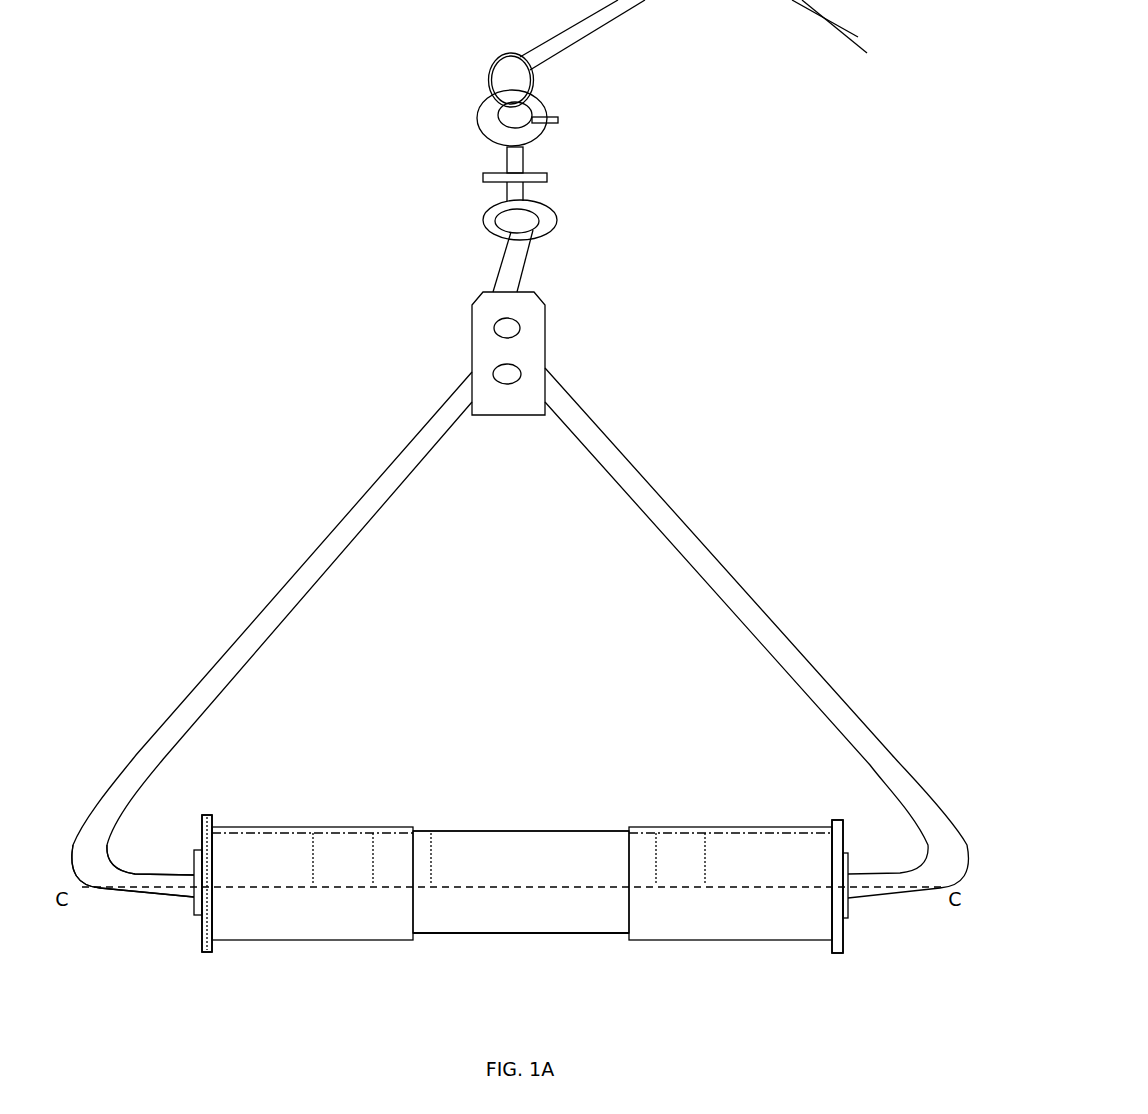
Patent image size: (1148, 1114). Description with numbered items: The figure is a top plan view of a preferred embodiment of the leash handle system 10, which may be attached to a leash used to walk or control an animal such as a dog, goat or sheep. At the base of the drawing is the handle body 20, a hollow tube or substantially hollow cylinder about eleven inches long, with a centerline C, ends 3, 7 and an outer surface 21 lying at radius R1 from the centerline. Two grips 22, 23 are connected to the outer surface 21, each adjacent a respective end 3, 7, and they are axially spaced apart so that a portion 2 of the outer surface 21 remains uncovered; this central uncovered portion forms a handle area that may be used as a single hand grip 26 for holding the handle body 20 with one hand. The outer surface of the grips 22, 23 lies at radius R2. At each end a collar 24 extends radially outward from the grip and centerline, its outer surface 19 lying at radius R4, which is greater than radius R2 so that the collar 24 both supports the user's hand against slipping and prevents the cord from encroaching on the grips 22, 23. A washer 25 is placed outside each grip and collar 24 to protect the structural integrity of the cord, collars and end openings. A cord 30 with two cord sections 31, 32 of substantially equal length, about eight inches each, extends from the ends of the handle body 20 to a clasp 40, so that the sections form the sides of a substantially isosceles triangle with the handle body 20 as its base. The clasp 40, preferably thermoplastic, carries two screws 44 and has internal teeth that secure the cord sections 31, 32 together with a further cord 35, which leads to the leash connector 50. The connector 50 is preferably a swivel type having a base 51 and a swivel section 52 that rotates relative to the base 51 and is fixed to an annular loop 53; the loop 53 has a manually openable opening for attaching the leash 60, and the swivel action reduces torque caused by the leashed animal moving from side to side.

The portion of the outer surface 2 is at (528, 941).
The end 3 is at (207, 948).
The end 7 is at (836, 957).
The leash handle system 10 is at (676, 428).
The outer surface of the collar 19 is at (205, 951).
The handle body 20 is at (578, 935).
The outer surface 21 is at (545, 848).
The grip 22 is at (797, 943).
The grip 23 is at (260, 946).
The collar 24 is at (198, 936).
The washer 25 is at (190, 912).
The single hand grip 26 is at (480, 912).
The cord 30 is at (250, 620).
The cord section 31 is at (728, 563).
The cord section 32 is at (318, 538).
The cord 35 is at (524, 273).
The clasp 40 is at (467, 350).
The screw 44 is at (490, 323).
The leash connector 50 is at (476, 138).
The base 51 is at (527, 158).
The swivel section 52 is at (528, 187).
The annular loop 53 is at (483, 105).
The leash 60 is at (632, 14).
The radius to the outer surface R1 is at (310, 848).
The radius to the outer surface of grips R2 is at (374, 828).
The radius of the collar R4 is at (204, 830).